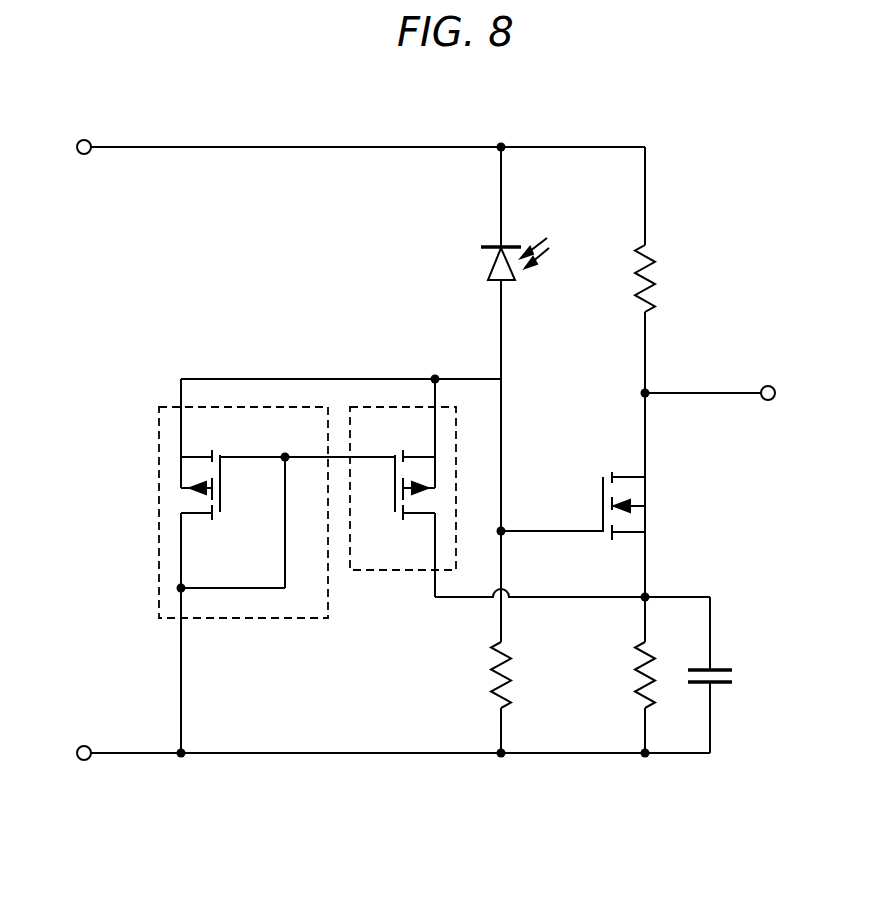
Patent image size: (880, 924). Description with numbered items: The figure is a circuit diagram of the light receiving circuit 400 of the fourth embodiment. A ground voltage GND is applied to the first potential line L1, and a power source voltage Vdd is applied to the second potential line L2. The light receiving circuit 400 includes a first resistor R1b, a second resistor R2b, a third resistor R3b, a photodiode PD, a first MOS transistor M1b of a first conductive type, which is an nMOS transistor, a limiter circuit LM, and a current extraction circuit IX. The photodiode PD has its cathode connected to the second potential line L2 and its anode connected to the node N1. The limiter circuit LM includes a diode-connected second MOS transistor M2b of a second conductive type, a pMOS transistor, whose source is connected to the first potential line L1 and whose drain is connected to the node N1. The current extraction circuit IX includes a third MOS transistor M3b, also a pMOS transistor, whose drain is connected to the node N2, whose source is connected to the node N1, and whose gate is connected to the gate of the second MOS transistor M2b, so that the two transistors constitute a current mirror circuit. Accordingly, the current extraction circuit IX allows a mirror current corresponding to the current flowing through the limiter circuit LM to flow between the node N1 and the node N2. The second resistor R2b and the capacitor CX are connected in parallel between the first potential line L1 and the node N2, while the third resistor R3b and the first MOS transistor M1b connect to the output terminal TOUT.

The power source voltage Vdd is at (87, 130).
The second potential line L2 is at (92, 143).
The ground voltage GND is at (85, 774).
The first potential line L1 is at (92, 757).
The output terminal TOUT is at (768, 401).
The photodiode PD is at (487, 268).
The third resistor R3b is at (656, 278).
The first MOS transistor M1b is at (628, 472).
The node N1 is at (504, 528).
The node N2 is at (648, 594).
The limiter circuit LM is at (215, 405).
The current extraction circuit IX is at (370, 405).
The second MOS transistor M2b is at (190, 514).
The third MOS transistor M3b is at (420, 514).
The first resistor R1b is at (492, 684).
The second resistor R2b is at (636, 684).
The capacitor CX is at (733, 670).
The light receiving circuit 400 is at (438, 893).